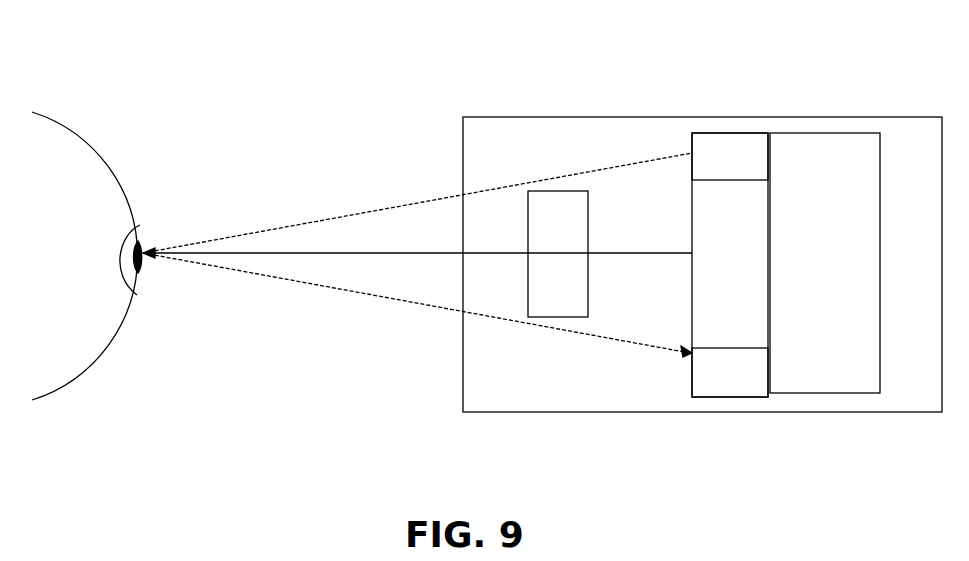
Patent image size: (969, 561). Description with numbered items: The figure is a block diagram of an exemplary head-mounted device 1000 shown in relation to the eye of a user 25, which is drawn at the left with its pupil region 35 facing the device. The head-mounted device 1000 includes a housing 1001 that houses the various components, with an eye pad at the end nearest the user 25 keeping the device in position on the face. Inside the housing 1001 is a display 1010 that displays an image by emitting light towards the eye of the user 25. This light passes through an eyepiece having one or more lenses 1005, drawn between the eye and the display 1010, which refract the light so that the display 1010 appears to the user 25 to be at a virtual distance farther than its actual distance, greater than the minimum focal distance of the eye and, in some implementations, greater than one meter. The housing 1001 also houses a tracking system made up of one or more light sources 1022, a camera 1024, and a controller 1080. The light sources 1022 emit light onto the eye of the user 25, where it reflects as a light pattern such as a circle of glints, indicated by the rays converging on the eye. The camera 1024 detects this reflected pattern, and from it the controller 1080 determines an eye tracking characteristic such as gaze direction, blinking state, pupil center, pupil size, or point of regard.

The user 25 is at (101, 181).
The pupil 35 is at (145, 238).
The head-mounted device 1000 is at (302, 78).
The housing 1001 is at (530, 148).
The lenses 1005 is at (582, 263).
The display 1010 is at (756, 269).
The light sources 1022 is at (756, 168).
The camera 1024 is at (756, 388).
The controller 1080 is at (851, 253).